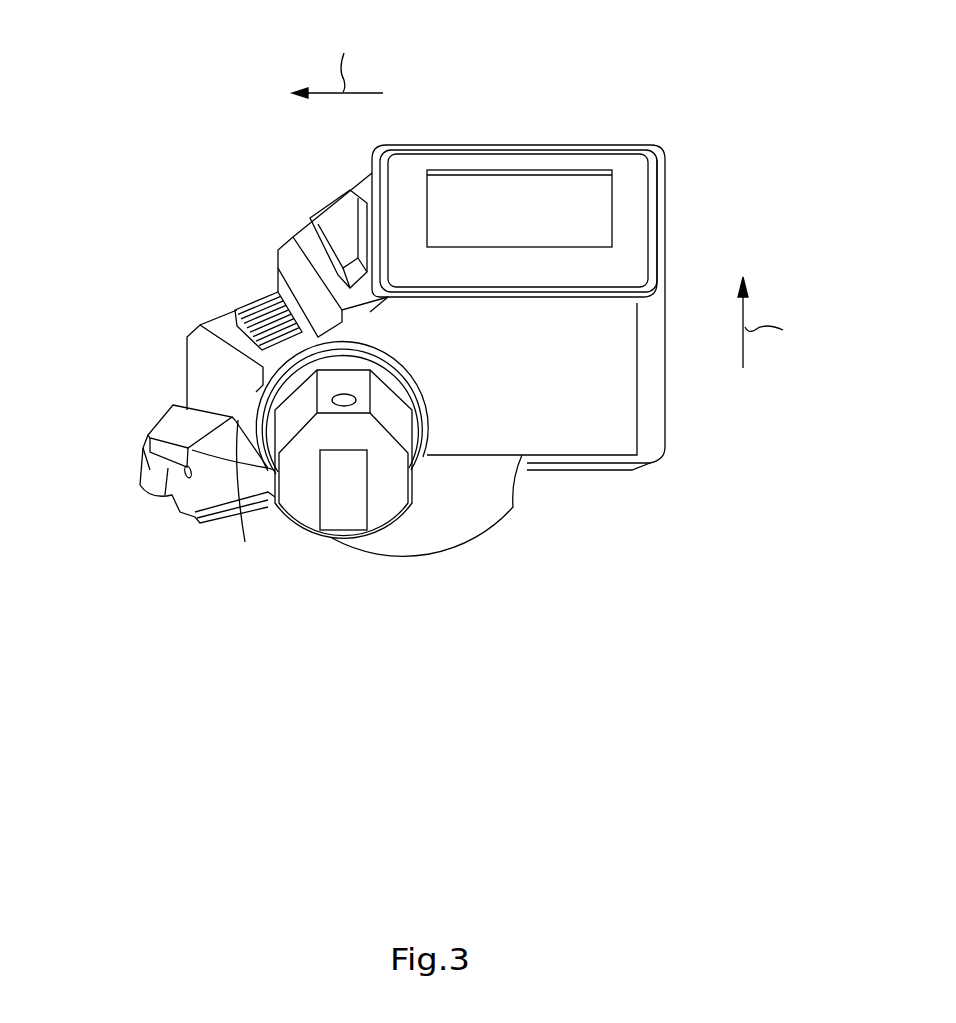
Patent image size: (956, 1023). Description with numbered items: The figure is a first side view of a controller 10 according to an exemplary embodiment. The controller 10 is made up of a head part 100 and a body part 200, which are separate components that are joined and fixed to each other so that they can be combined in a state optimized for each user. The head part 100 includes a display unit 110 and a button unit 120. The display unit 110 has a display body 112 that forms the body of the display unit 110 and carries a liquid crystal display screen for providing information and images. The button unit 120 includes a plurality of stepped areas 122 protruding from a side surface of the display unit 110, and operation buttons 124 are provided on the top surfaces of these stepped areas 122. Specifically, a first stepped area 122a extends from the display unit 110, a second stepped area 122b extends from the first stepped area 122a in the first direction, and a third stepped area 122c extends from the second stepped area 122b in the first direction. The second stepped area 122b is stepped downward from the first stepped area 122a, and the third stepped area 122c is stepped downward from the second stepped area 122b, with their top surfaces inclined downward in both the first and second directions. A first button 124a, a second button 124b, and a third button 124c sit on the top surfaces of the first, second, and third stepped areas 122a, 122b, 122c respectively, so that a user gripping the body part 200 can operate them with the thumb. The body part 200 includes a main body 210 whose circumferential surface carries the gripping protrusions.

The controller 10 is at (92, 25).
The head part 100 is at (262, 743).
The display unit 110 is at (494, 99).
The display body 112 is at (586, 153).
The button unit 120 is at (150, 378).
The stepped areas 122 is at (416, 743).
The first stepped area 122a is at (304, 240).
The second stepped area 122b is at (217, 325).
The third stepped area 122c is at (245, 540).
The buttons 124 is at (571, 743).
The first button 124a is at (332, 218).
The second button 124b is at (257, 305).
The third button 124c is at (172, 425).
The body part 200 is at (317, 552).
The main body 210 is at (388, 500).